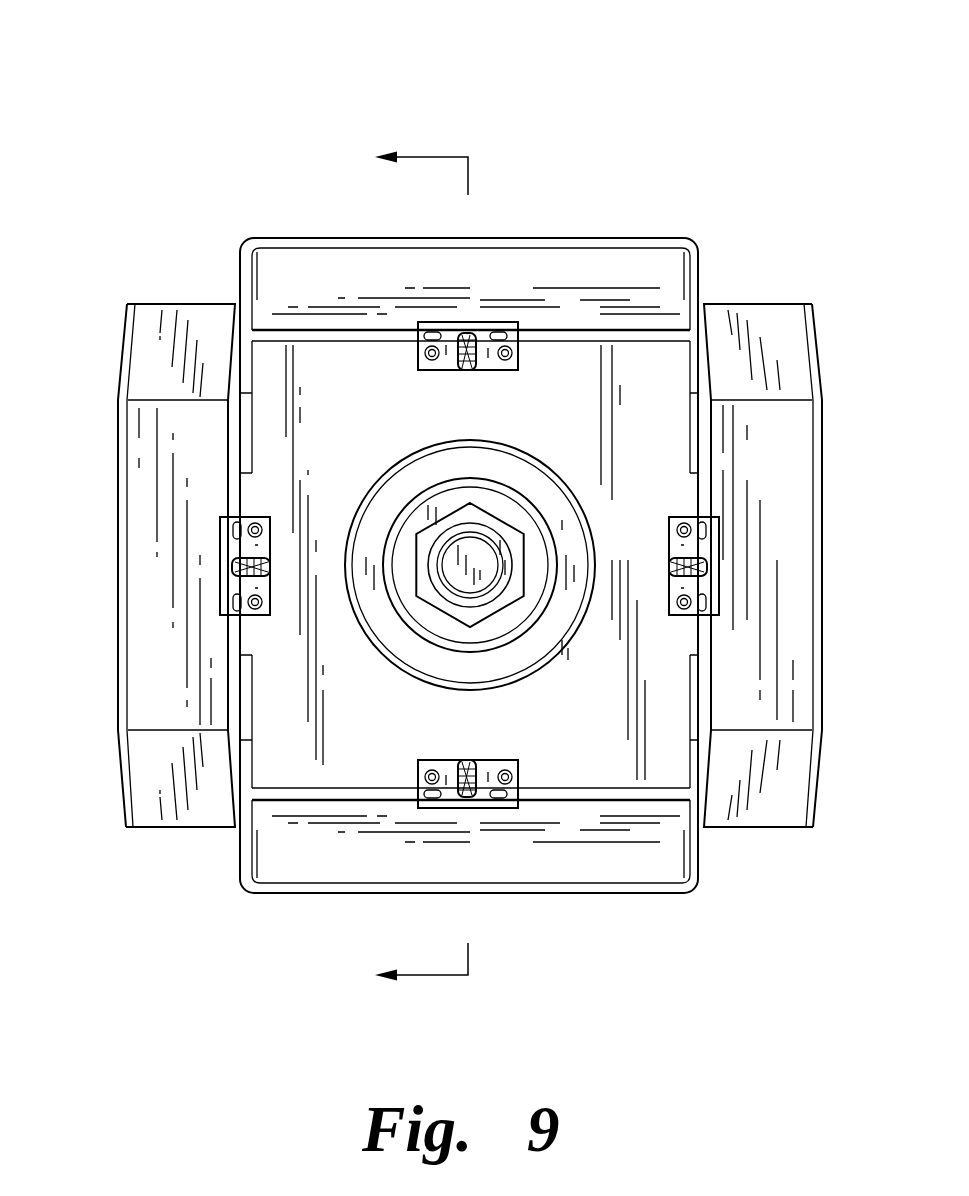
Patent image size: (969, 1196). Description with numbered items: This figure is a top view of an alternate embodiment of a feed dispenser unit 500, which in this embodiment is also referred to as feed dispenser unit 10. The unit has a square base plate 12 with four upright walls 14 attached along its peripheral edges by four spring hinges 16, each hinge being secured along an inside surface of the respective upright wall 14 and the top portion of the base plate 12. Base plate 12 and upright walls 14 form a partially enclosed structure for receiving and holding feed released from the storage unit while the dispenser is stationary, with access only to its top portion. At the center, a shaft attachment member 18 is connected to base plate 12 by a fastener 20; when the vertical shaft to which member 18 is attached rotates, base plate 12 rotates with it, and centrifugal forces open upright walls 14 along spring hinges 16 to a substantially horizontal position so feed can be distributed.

The feed dispenser unit 500 is at (86, 88).
The feed dispenser unit 10 is at (421, 571).
The base plate 12 is at (413, 731).
The upright walls 14 is at (602, 238).
The spring hinges 16 is at (500, 372).
The shaft attachment member 18 is at (548, 628).
The fastener 20 is at (457, 522).